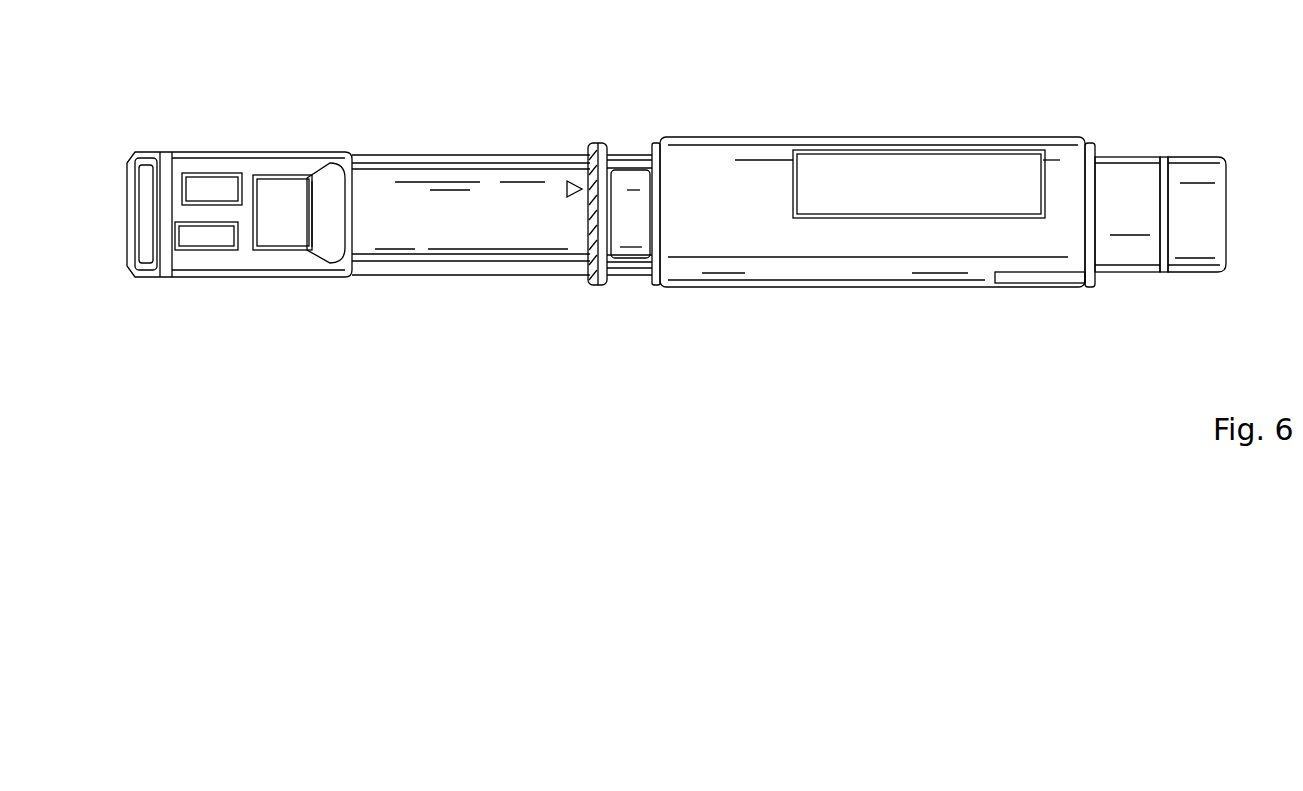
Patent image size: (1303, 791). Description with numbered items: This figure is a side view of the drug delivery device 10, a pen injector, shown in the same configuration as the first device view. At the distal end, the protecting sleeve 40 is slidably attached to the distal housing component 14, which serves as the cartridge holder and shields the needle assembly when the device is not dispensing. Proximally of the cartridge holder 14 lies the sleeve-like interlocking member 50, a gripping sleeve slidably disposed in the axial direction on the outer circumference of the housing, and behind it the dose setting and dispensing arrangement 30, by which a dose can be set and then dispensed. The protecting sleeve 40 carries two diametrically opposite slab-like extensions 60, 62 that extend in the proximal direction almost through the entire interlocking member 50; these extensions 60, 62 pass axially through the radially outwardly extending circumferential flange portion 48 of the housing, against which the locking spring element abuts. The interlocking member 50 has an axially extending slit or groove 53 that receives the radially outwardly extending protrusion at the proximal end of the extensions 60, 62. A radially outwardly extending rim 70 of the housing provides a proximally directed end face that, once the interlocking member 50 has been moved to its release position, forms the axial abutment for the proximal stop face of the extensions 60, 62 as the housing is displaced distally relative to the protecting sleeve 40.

The drug delivery device 10 is at (158, 118).
The distal housing component 14 is at (507, 240).
The dose setting and/or dose dispensing arrangement 30 is at (1213, 165).
The protecting sleeve 40 is at (305, 263).
The flange portion 48 is at (596, 285).
The interlocking member 50 is at (851, 272).
The slit or groove 53 is at (1056, 276).
The slab-like extension 60 is at (447, 264).
The slab-like extension 62 is at (484, 156).
The rim 70 is at (1090, 282).